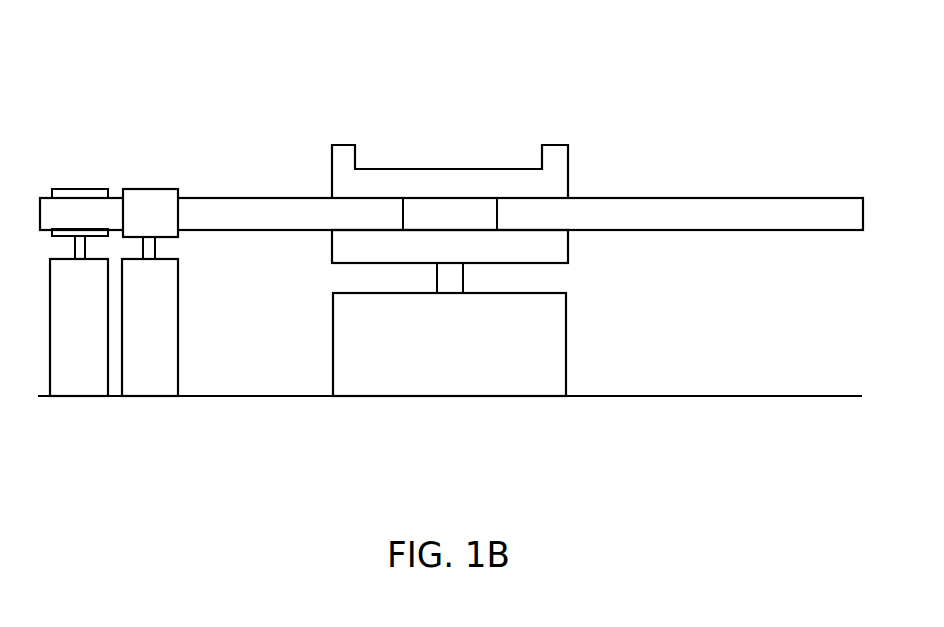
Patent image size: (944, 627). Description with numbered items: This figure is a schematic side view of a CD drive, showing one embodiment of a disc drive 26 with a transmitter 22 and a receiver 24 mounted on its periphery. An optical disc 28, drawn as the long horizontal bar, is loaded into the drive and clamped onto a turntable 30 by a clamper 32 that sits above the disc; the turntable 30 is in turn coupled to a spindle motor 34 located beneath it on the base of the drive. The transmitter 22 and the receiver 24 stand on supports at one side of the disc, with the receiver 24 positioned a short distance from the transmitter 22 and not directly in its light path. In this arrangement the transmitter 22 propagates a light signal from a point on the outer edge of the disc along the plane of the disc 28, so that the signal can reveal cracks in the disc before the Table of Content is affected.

The transmitter 22 is at (58, 193).
The receiver 24 is at (138, 195).
The disc drive 26 is at (717, 433).
The optical disc 28 is at (772, 210).
The turntable 30 is at (553, 242).
The clamper 32 is at (397, 175).
The spindle motor 34 is at (553, 333).